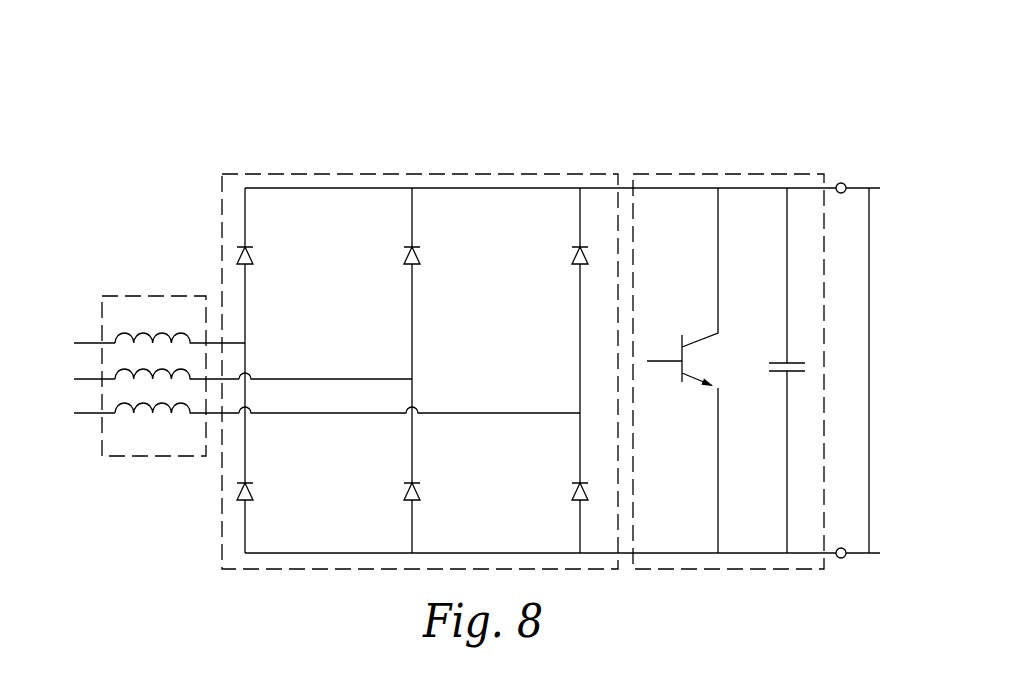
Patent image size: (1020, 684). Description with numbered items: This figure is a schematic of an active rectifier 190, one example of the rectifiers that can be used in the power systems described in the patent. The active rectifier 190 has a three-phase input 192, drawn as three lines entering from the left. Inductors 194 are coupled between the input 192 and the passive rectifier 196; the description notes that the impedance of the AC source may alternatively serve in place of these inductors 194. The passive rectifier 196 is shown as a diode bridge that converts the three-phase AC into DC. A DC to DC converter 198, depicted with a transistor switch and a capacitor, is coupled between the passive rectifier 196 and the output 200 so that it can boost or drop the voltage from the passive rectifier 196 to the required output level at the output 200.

The active rectifier 190 is at (76, 132).
The three-phase input 192 is at (70, 333).
The inductors 194 is at (122, 457).
The passive rectifier 196 is at (497, 172).
The DC to DC converter 198 is at (688, 172).
The output 200 is at (869, 361).